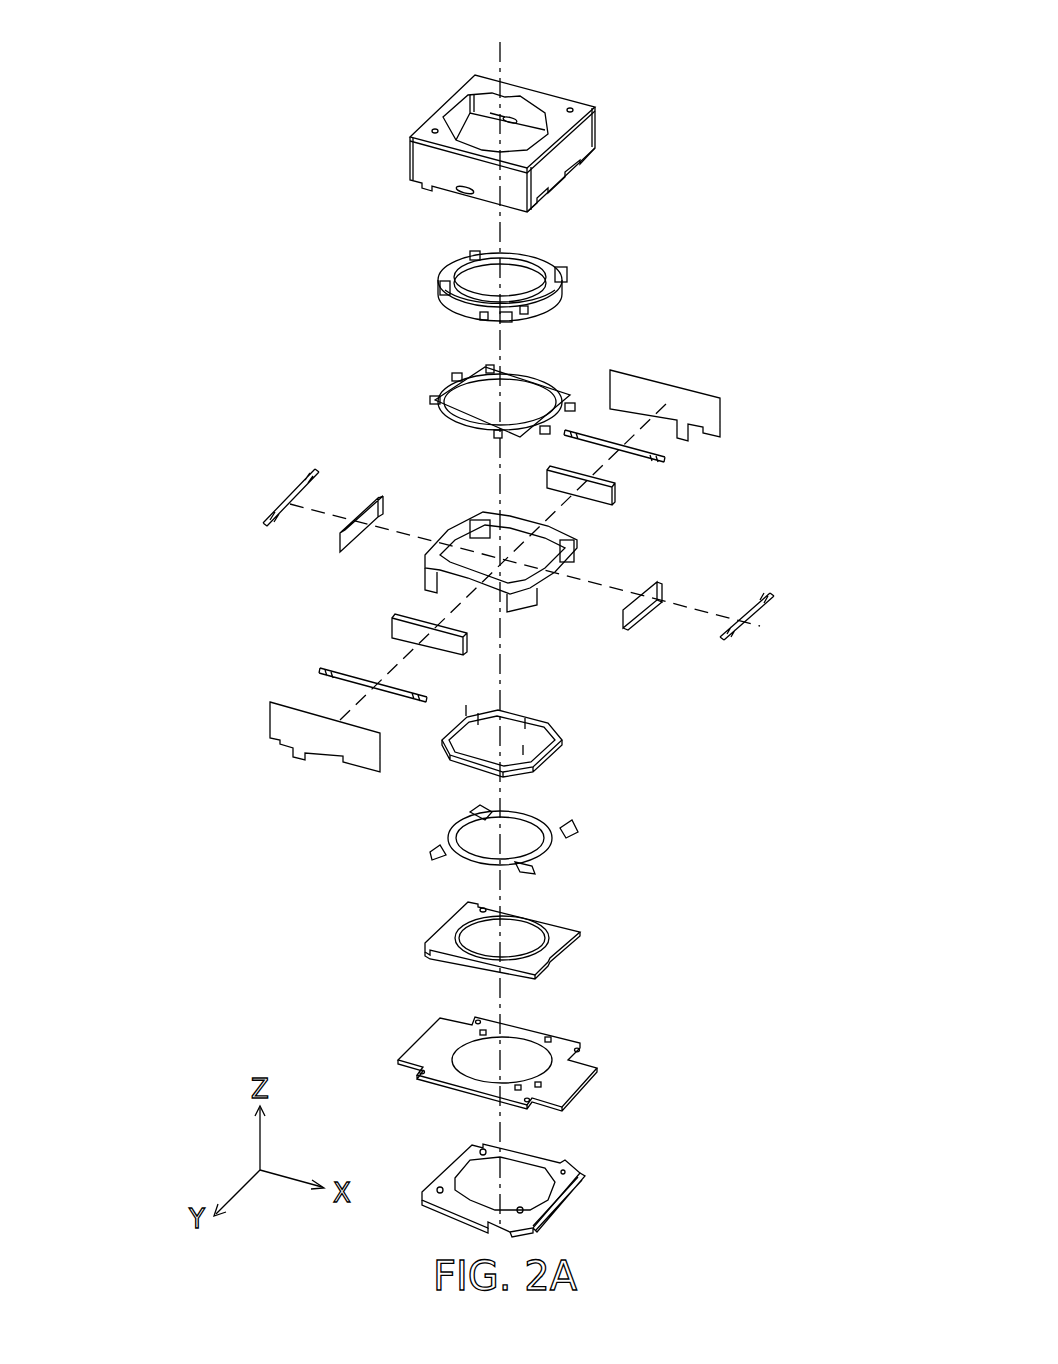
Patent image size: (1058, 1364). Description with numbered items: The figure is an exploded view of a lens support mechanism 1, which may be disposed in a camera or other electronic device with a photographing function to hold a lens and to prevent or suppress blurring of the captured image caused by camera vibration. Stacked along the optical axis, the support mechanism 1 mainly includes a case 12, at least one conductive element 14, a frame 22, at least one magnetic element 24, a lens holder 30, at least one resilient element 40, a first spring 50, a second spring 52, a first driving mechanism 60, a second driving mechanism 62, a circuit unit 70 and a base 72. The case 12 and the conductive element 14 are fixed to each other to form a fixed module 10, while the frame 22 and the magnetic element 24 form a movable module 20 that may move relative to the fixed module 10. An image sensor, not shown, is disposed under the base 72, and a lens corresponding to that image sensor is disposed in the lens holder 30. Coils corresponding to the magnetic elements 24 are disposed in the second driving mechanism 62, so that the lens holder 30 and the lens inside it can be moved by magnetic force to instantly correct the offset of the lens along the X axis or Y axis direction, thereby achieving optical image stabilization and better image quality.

The lens support mechanism 1 is at (250, 38).
The fixed module 10 is at (184, 143).
The case 12 is at (423, 163).
The conductive element 14 is at (770, 432).
The movable module 20 is at (184, 233).
The frame 22 is at (592, 665).
The magnetic element 24 is at (690, 682).
The lens holder 30 is at (445, 280).
The resilient element 40 is at (298, 487).
The first spring 50 is at (445, 393).
The second spring 52 is at (575, 830).
The first driving mechanism 60 is at (560, 752).
The second driving mechanism 62 is at (580, 937).
The circuit unit 70 is at (563, 1082).
The base 72 is at (583, 1177).